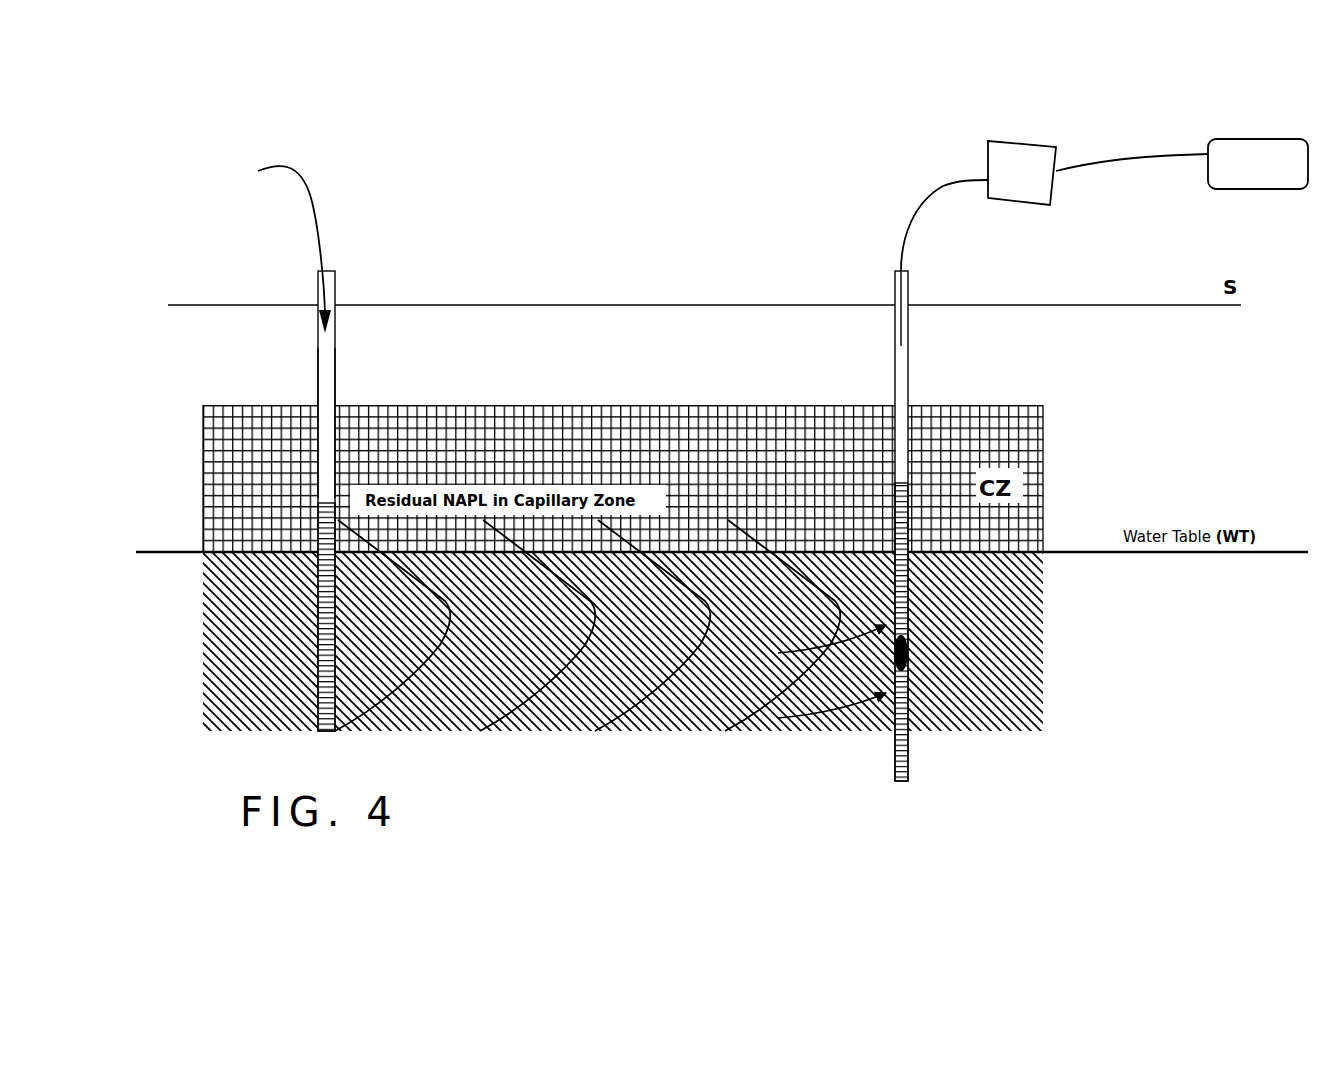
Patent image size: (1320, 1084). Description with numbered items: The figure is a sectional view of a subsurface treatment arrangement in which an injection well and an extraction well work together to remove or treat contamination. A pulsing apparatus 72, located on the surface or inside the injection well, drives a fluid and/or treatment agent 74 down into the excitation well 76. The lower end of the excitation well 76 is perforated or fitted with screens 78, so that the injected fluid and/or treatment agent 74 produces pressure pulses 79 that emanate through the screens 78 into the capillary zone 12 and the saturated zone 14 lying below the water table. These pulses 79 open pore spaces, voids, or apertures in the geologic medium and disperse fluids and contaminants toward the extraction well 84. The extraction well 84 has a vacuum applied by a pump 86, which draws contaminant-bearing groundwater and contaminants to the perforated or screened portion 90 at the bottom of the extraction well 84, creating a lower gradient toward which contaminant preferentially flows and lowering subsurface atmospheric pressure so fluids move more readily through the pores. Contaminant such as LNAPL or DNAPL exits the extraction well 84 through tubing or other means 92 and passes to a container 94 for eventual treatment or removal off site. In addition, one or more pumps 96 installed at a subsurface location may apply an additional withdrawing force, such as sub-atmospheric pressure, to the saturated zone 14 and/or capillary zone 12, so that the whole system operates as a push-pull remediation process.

The capillary zone 12 is at (215, 432).
The saturated zone 14 is at (225, 645).
The pulsing apparatus 72 is at (294, 247).
The fluid and/or treatment agent 74 is at (345, 501).
The excitation well 76 is at (328, 378).
The screens 78 is at (341, 617).
The pressure pulses 79 is at (587, 625).
The extraction well 84 is at (901, 378).
The vacuum pump 86 is at (1012, 186).
The perforated or screened portion 90 is at (915, 632).
The tubing 92 is at (1107, 143).
The container 94 is at (1258, 164).
The subsurface pump 96 is at (900, 645).